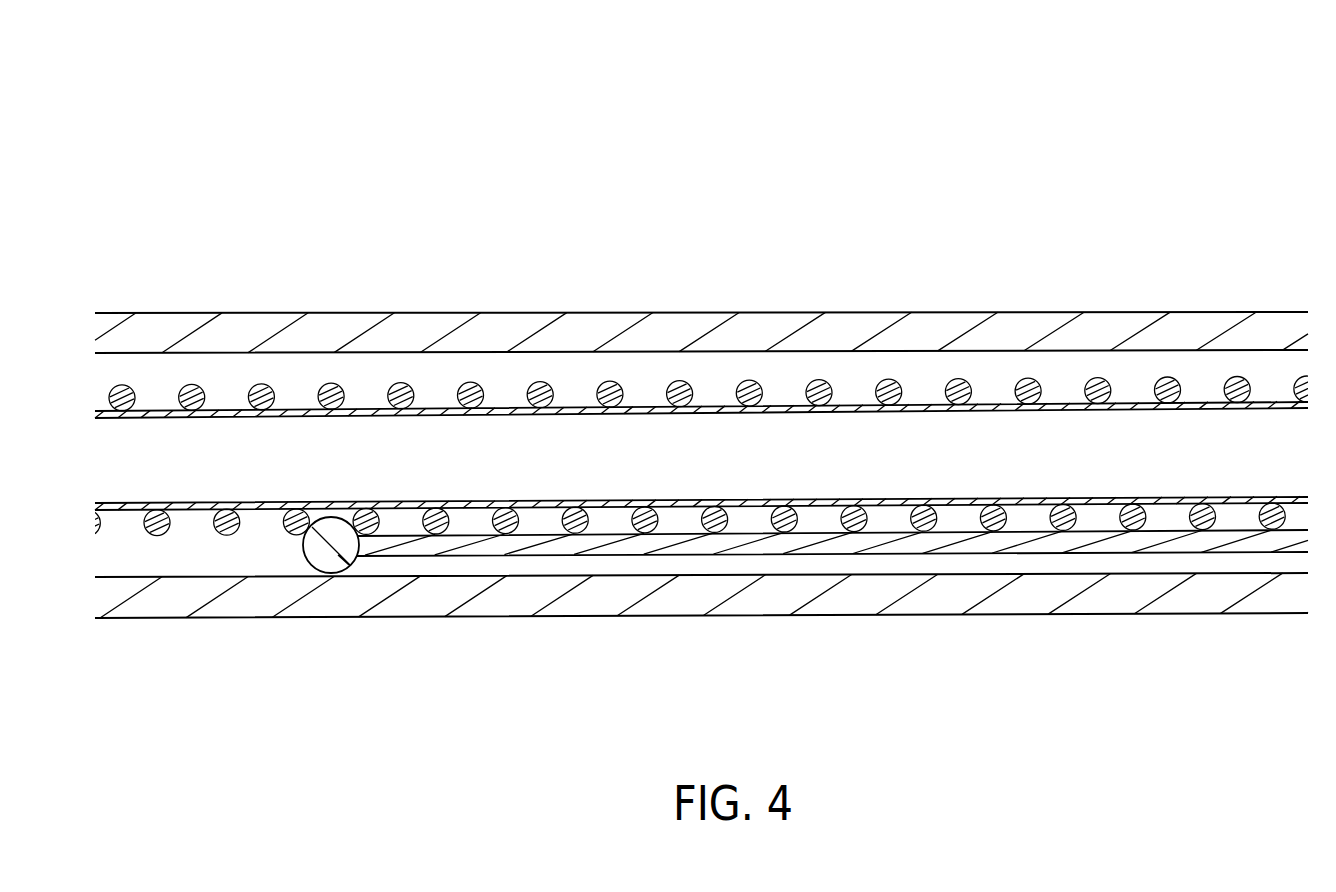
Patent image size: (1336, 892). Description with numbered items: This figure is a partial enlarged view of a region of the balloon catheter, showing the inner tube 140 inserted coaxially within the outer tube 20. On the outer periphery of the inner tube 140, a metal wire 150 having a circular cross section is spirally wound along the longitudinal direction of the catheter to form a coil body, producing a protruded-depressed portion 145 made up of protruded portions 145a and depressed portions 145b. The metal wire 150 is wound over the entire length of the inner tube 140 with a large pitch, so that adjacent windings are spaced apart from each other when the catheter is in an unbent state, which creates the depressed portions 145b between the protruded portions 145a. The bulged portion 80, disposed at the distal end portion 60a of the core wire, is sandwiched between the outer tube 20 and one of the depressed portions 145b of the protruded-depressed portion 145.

The outer tube 20 is at (777, 187).
The inner tube 140 is at (938, 375).
The protruded-depressed portion 145 is at (678, 177).
The protruded portions 145a is at (467, 357).
The depressed portions 145b is at (583, 380).
The metal wire 150 is at (818, 380).
The bulged portion 80 is at (345, 557).
The distal end portion of the core wire 60a is at (577, 545).